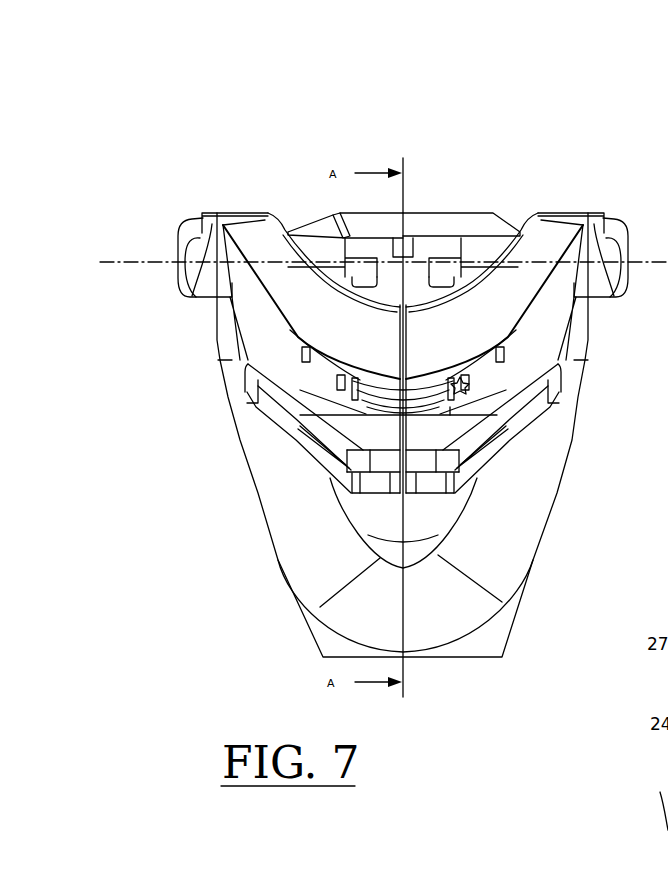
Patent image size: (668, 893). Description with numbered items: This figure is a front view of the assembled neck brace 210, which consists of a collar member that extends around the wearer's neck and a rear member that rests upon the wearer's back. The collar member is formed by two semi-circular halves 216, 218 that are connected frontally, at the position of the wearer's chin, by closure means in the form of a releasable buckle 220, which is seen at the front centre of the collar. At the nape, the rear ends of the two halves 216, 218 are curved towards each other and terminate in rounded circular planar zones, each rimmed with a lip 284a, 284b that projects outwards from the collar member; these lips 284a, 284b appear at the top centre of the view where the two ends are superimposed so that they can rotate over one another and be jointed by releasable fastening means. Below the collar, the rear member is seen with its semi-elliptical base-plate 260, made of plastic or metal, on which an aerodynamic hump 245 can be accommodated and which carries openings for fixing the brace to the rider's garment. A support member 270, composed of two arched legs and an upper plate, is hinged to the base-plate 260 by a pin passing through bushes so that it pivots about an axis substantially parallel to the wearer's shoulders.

The neck brace 210 is at (387, 108).
The semi-circular half 216 is at (547, 250).
The semi-circular half 218 is at (248, 238).
The releasable buckle 220 is at (383, 403).
The aerodynamic hump 245 is at (490, 542).
The base-plate 260 is at (433, 507).
The support member 270 is at (667, 542).
The lip 284a is at (373, 228).
The lip 284b is at (440, 228).